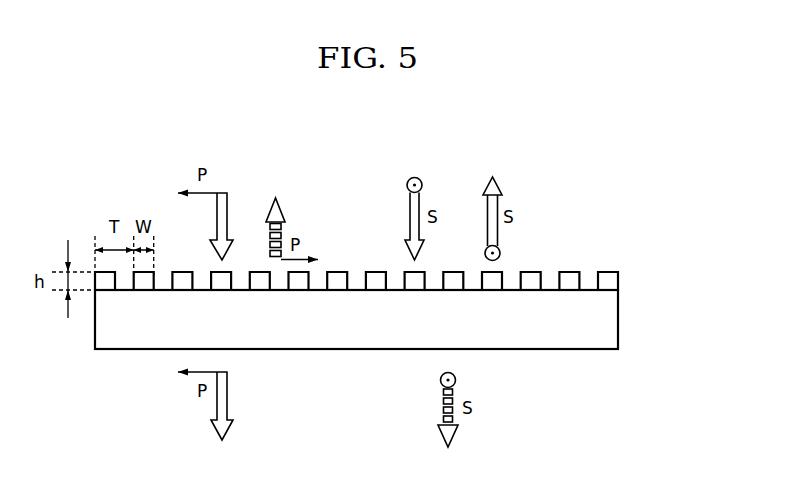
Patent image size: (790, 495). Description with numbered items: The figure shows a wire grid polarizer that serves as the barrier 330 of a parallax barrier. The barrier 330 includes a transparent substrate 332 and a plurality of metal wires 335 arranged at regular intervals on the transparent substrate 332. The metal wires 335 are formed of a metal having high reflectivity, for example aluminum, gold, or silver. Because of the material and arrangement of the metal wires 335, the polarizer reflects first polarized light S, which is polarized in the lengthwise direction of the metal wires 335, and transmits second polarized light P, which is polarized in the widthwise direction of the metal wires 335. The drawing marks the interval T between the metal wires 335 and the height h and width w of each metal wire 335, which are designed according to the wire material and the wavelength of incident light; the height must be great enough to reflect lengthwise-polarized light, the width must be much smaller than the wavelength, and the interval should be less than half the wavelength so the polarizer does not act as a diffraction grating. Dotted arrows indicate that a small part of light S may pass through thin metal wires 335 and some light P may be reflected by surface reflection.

The barrier 330 is at (392, 251).
The transparent substrate 332 is at (605, 320).
The metal wires 335 is at (605, 282).